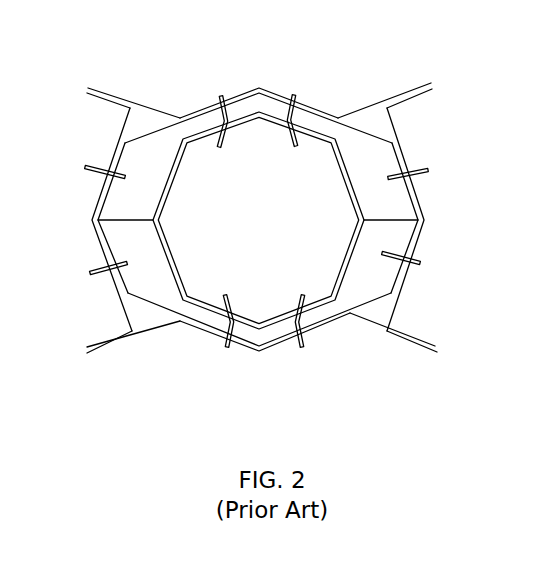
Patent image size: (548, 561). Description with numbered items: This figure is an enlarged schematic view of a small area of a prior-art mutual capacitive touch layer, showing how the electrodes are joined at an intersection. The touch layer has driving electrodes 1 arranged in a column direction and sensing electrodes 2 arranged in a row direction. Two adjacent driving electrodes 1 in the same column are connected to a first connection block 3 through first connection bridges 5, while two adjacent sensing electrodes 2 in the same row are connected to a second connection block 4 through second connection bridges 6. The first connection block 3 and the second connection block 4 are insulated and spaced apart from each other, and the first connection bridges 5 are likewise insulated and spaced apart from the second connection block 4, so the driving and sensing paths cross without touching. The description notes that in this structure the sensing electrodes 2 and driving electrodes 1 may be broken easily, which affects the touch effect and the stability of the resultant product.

The driving electrode 1 is at (390, 83).
The sensing electrode 2 is at (87, 127).
The first connection block 3 is at (198, 160).
The second connection block 4 is at (160, 158).
The first connection bridge 5 is at (293, 98).
The second connection bridge 6 is at (417, 170).